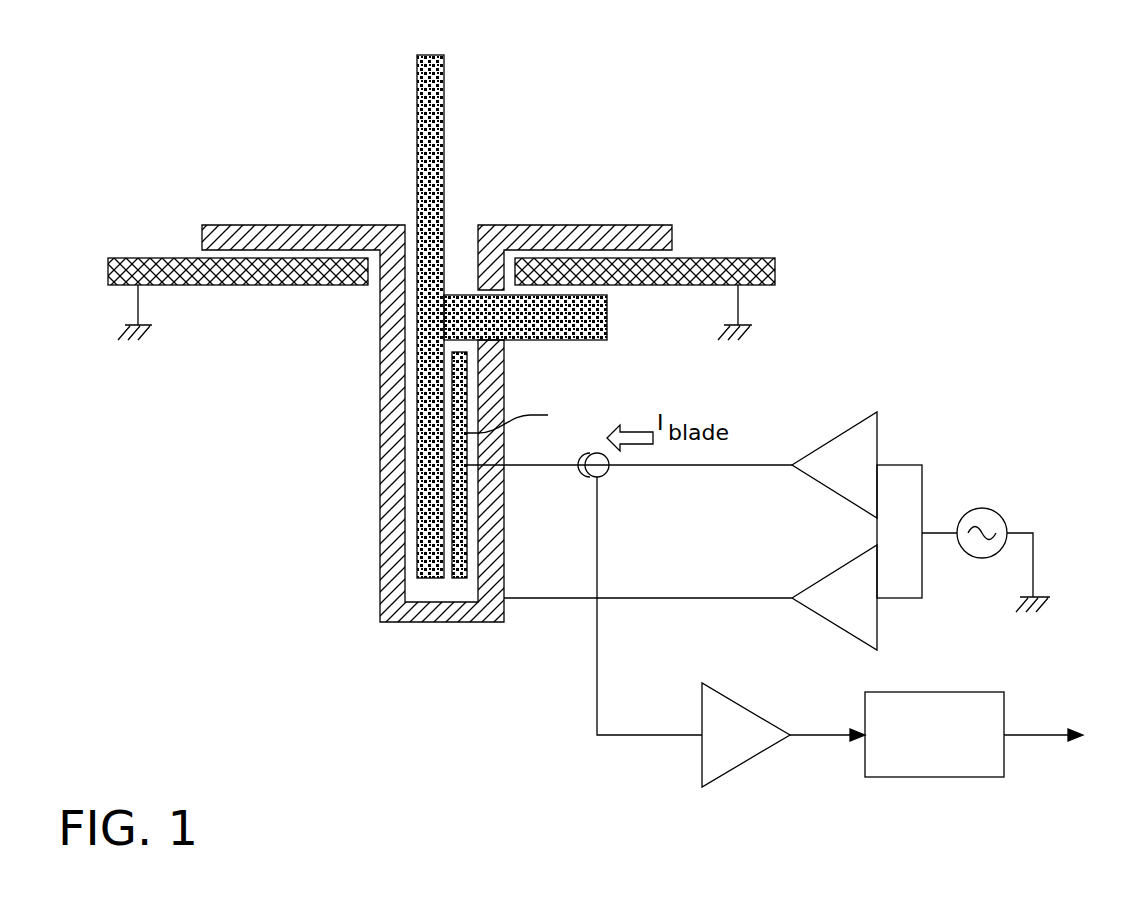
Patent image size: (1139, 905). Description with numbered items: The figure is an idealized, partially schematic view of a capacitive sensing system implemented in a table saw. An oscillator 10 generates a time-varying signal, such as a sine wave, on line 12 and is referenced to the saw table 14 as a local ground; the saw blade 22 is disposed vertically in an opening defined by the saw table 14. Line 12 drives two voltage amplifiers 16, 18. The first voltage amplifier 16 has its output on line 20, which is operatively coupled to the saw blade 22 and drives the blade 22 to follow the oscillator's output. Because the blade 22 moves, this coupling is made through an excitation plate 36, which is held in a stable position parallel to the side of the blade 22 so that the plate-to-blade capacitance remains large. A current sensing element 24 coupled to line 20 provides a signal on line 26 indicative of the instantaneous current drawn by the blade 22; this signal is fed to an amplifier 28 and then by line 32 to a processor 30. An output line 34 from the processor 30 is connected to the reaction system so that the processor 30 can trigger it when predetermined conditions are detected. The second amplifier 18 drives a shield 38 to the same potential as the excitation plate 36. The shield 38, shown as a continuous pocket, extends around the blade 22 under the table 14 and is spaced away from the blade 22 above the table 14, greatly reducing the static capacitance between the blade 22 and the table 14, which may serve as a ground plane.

The oscillator 10 is at (1000, 513).
The line 12 is at (922, 480).
The saw table 14 is at (138, 258).
The first voltage amplifier 16 is at (877, 432).
The second voltage amplifier 18 is at (877, 623).
The line 20 is at (748, 465).
The saw blade 22 is at (420, 498).
The current sensing element 24 is at (607, 475).
The line 26 is at (635, 735).
The amplifier 28 is at (735, 768).
The processor 30 is at (965, 777).
The line 32 is at (820, 735).
The output line 34 is at (1030, 735).
The excitation plate 36 is at (521, 465).
The shield 38 is at (380, 462).